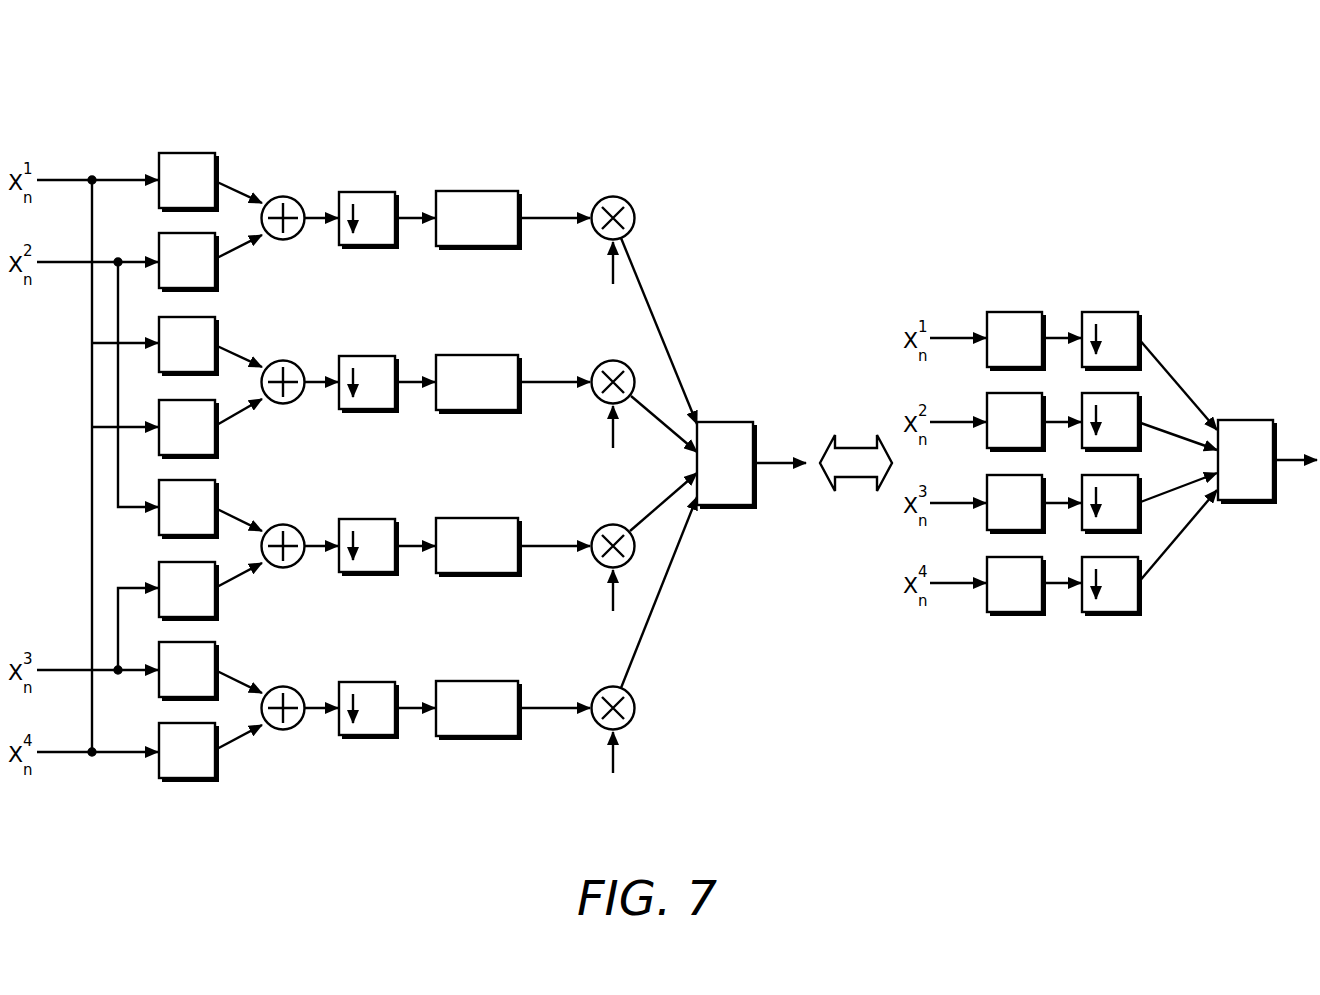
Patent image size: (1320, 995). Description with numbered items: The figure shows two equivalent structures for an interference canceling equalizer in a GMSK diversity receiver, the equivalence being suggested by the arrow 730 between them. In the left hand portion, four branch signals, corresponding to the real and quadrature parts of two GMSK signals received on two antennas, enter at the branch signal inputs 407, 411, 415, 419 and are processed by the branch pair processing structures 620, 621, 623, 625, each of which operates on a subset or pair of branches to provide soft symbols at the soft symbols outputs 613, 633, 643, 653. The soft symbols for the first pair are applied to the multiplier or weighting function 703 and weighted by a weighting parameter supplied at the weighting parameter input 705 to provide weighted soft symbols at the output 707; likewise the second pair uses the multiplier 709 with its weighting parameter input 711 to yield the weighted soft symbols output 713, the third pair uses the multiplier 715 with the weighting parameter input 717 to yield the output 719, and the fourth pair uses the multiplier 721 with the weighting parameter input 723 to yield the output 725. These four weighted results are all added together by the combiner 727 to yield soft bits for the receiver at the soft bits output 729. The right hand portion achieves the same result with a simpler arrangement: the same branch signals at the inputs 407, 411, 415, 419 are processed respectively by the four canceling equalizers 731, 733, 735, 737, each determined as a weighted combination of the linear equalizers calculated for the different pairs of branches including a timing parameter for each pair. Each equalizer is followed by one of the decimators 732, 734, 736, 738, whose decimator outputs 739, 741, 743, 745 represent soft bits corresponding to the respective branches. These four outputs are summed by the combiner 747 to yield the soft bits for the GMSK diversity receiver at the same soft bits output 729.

The branch signal input 407 is at (58, 178).
The branch signal input 411 is at (58, 261).
The branch signal input 415 is at (58, 669).
The branch signal input 419 is at (58, 751).
The branch pair processing structure 620 is at (413, 160).
The branch pair processing structure 621 is at (415, 324).
The branch pair processing structure 623 is at (415, 487).
The branch pair processing structure 625 is at (415, 649).
The soft symbols output 613 is at (552, 225).
The soft symbols output 633 is at (552, 389).
The soft symbols output 643 is at (552, 553).
The soft symbols output 653 is at (552, 715).
The multiplier or weighting function 703 is at (620, 197).
The weighting parameter input 705 is at (608, 266).
The weighted soft symbols output 707 is at (665, 325).
The multiplier or weighting function 709 is at (597, 370).
The weighting parameter input 711 is at (608, 430).
The weighted soft symbols output 713 is at (656, 421).
The multiplier or weighting function 715 is at (597, 529).
The weighting parameter input 717 is at (608, 593).
The weighted soft symbols output 719 is at (654, 510).
The multiplier or weighting function 721 is at (597, 692).
The weighting parameter input 723 is at (608, 756).
The weighted soft symbols output 725 is at (676, 552).
The combiner 727 is at (732, 421).
The soft bits output 729 is at (780, 470).
The equivalence arrow 730 is at (851, 448).
The canceling equalizer 731 is at (1017, 311).
The decimator 732 is at (1118, 311).
The canceling equalizer 733 is at (986, 406).
The decimator 734 is at (1082, 406).
The canceling equalizer 735 is at (986, 488).
The decimator 736 is at (1082, 488).
The canceling equalizer 737 is at (1020, 615).
The decimator 738 is at (1082, 570).
The decimator output 739 is at (1169, 372).
The decimator output 741 is at (1163, 435).
The decimator output 743 is at (1160, 493).
The decimator output 745 is at (1183, 536).
The combiner 747 is at (1249, 417).